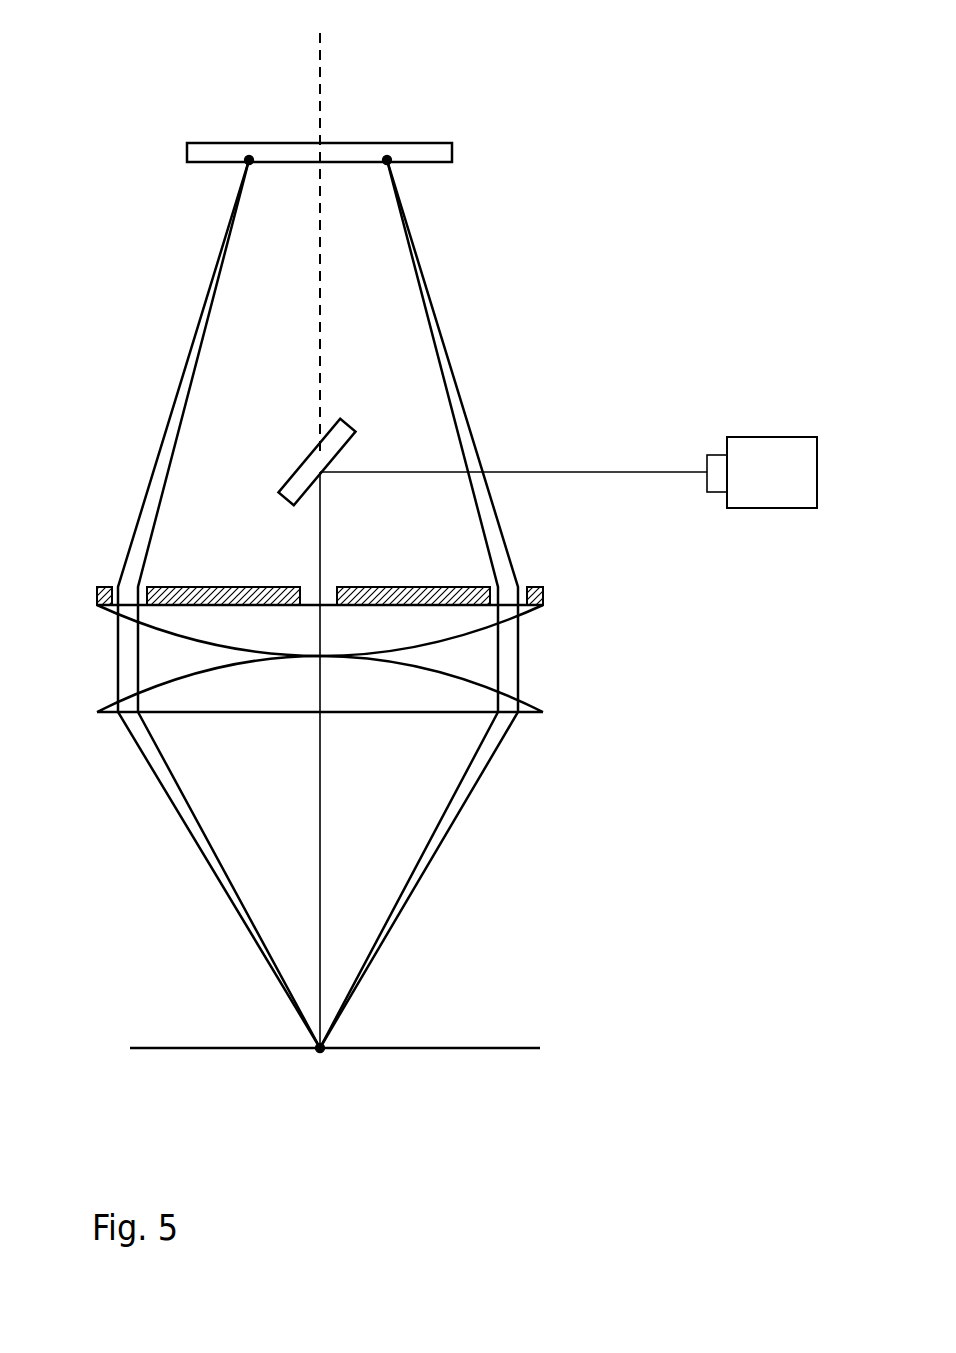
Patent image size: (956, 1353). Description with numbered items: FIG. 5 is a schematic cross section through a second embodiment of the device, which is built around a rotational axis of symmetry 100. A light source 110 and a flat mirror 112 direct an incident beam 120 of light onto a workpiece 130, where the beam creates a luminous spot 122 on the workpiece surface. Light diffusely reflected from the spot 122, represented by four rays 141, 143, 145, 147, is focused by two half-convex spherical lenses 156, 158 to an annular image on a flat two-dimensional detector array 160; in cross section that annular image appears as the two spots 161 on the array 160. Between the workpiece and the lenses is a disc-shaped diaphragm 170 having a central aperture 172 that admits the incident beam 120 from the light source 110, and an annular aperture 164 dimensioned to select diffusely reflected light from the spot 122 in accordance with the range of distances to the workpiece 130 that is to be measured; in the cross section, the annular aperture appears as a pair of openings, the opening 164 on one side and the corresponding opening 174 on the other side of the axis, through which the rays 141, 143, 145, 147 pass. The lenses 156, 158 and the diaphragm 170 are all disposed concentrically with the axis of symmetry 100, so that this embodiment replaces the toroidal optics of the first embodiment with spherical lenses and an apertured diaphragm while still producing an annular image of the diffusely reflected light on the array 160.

The axis of symmetry 100 is at (322, 57).
The detector array 160 is at (383, 147).
The spots 161 is at (387, 162).
The diffusely reflected ray 147 is at (205, 302).
The diffusely reflected ray 145 is at (188, 385).
The diffusely reflected ray 143 is at (428, 285).
The diffusely reflected ray 141 is at (444, 352).
The flat mirror 112 is at (347, 420).
The light source 110 is at (792, 487).
The incident beam 120 is at (321, 793).
The diaphragm 170 is at (540, 593).
The annular aperture 164 is at (128, 592).
The central aperture 172 is at (317, 592).
The right aperture 174 is at (508, 590).
The half-convex spherical lens 156 is at (375, 636).
The half-convex spherical lens 158 is at (375, 699).
The luminous spot 122 is at (322, 1050).
The workpiece 130 is at (482, 1049).